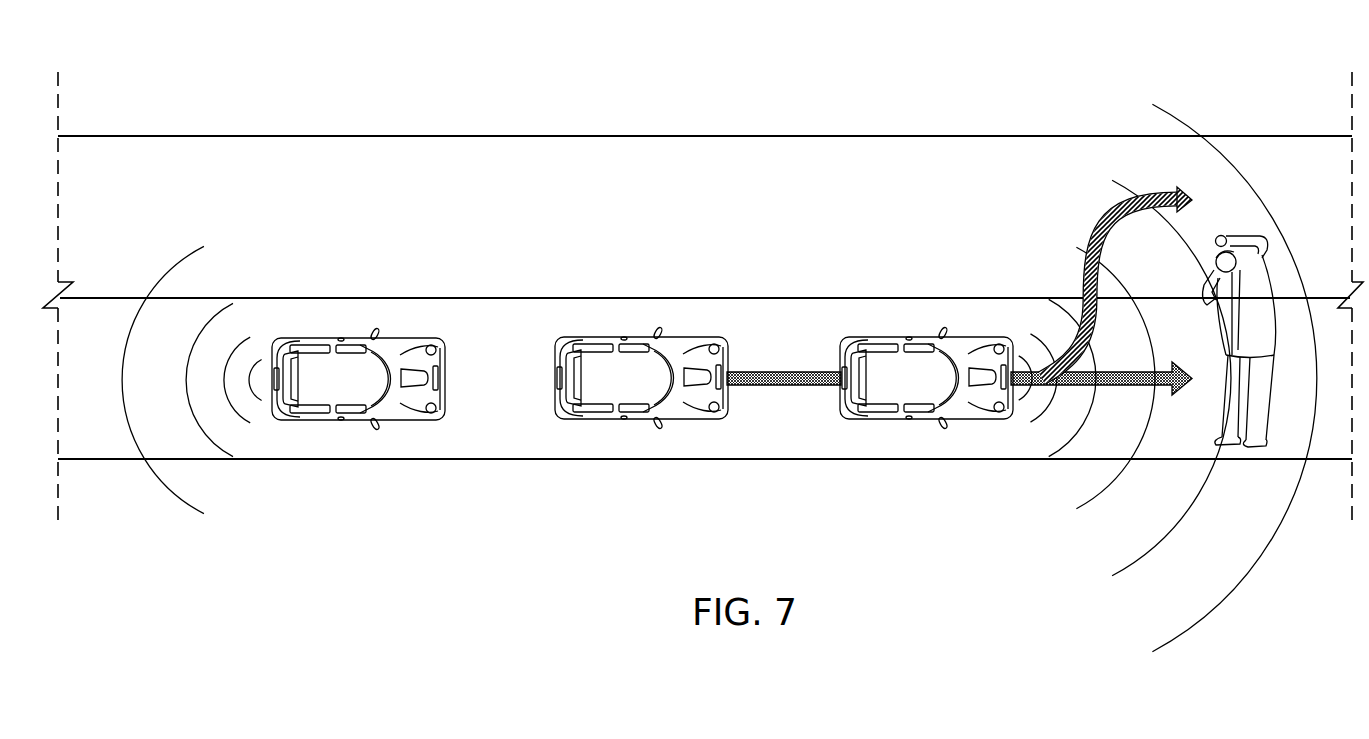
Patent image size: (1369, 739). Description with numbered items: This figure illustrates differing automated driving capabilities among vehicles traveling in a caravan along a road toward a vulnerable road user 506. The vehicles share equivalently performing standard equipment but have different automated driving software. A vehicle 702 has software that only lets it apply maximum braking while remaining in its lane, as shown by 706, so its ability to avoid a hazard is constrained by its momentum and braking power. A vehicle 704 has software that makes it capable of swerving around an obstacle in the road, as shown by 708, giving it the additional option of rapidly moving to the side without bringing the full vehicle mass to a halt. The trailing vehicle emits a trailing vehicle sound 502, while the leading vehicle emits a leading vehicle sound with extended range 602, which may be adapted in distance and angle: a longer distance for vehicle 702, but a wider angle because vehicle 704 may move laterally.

The trailing vehicle sound 502 is at (235, 265).
The vulnerable road user 506 is at (1283, 233).
The leading vehicle sound having an extended range 602 is at (1050, 252).
The vehicle 702 is at (641, 432).
The vehicle 704 is at (923, 432).
The maximum braking while remaining in the lane 706 is at (783, 388).
The swerving around an obstacle 708 is at (1102, 215).